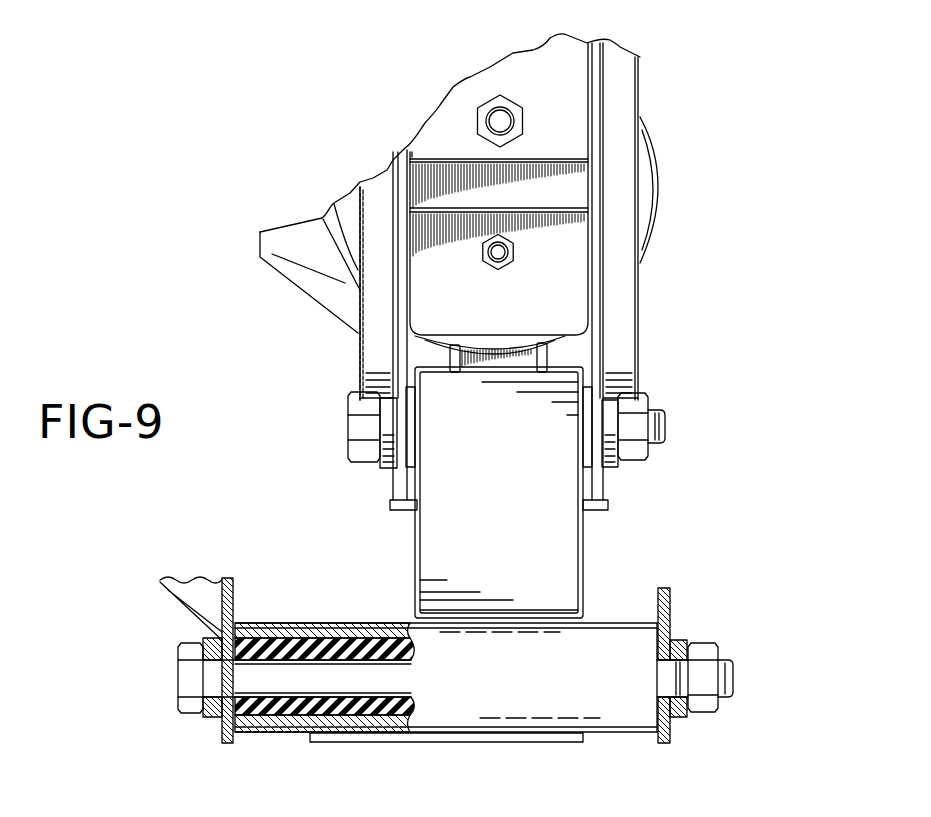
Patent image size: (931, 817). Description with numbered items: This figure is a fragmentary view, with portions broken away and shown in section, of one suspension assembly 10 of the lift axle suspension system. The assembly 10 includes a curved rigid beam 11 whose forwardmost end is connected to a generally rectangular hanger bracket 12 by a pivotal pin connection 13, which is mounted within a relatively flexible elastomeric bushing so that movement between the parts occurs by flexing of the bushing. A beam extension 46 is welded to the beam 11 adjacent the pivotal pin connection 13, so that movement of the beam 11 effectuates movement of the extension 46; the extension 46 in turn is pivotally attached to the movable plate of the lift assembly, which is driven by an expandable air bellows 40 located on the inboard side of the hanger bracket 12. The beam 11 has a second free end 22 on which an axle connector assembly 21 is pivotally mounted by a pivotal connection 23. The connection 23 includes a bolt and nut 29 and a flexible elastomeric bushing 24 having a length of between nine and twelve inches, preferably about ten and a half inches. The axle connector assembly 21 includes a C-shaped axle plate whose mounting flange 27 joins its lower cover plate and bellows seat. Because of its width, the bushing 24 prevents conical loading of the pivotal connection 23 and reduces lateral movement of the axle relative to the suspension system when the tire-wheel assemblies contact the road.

The suspension assembly 10 is at (268, 544).
The curved rigid beam 11 is at (547, 551).
The hanger bracket 12 is at (625, 297).
The pivotal pin connection 13 is at (350, 418).
The axle connector assembly 21 is at (692, 588).
The free end 22 is at (548, 603).
The pivotal connection 23 is at (176, 649).
The flexible elastomeric bushing 24 is at (267, 712).
The mounting flange 27 is at (233, 591).
The bolt and nut 29 is at (190, 704).
The expandable air bellows 40 is at (652, 186).
The beam extension 46 is at (455, 357).